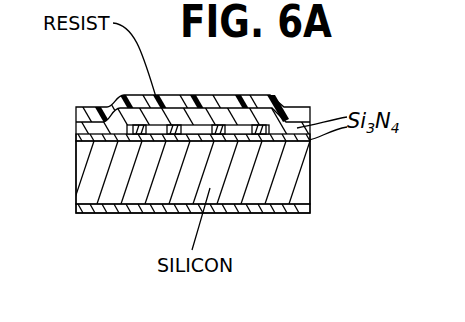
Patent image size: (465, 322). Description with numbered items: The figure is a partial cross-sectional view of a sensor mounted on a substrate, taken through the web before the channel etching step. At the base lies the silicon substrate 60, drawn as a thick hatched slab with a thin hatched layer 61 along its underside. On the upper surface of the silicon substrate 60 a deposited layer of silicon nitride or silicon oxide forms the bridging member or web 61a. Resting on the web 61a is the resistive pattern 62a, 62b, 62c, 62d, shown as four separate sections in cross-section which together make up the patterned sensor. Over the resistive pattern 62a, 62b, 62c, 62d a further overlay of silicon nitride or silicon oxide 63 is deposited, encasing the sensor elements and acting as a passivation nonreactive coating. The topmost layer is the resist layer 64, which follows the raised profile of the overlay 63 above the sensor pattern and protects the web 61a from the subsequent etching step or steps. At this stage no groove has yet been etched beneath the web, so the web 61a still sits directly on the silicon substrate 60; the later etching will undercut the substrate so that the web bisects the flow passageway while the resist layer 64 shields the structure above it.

The silicon substrate 60 is at (294, 180).
The bottom silicon nitride layer 61 is at (82, 213).
The web 61a is at (77, 137).
The resistive pattern 62a is at (135, 96).
The resistive pattern 62b is at (177, 95).
The resistive pattern 62c is at (235, 95).
The resistive pattern 62d is at (270, 95).
The overlay of silicon nitride 63 is at (77, 127).
The resist layer 64 is at (289, 107).